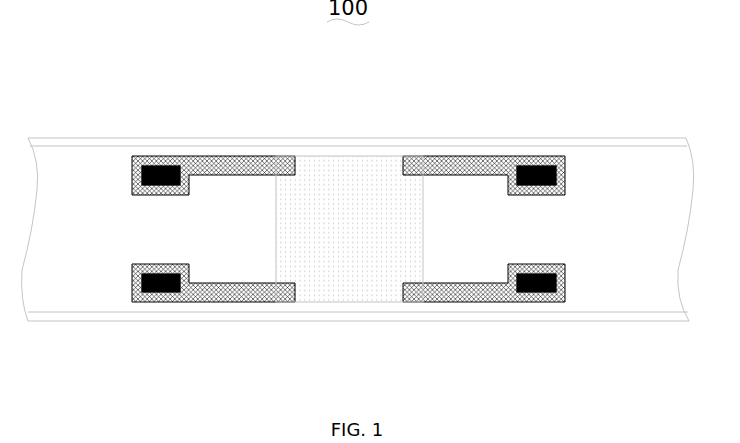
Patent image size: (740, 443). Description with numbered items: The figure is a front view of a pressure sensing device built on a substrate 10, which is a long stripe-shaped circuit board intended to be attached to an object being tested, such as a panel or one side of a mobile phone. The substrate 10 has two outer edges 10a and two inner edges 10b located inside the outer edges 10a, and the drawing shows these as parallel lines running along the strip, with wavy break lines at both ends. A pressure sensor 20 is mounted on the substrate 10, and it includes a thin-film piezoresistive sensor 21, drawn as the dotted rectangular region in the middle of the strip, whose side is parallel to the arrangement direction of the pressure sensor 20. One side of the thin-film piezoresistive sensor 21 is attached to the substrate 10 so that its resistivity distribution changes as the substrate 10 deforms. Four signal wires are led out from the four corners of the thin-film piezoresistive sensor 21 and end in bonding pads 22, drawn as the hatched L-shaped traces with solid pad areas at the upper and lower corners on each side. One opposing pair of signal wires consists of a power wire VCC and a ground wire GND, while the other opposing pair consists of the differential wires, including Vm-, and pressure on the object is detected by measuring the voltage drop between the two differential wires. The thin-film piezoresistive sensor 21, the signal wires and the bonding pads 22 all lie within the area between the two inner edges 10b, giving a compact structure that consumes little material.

The substrate 10 is at (245, 127).
The outer edges 10a is at (323, 138).
The inner edges 10b is at (625, 146).
The pressure sensor 20 is at (366, 187).
The thin-film piezoresistive sensor 21 is at (337, 238).
The bonding pads 22 is at (147, 159).
The power wire VCC is at (175, 159).
The differential wire Vm- is at (505, 165).
The ground wire GND is at (512, 295).